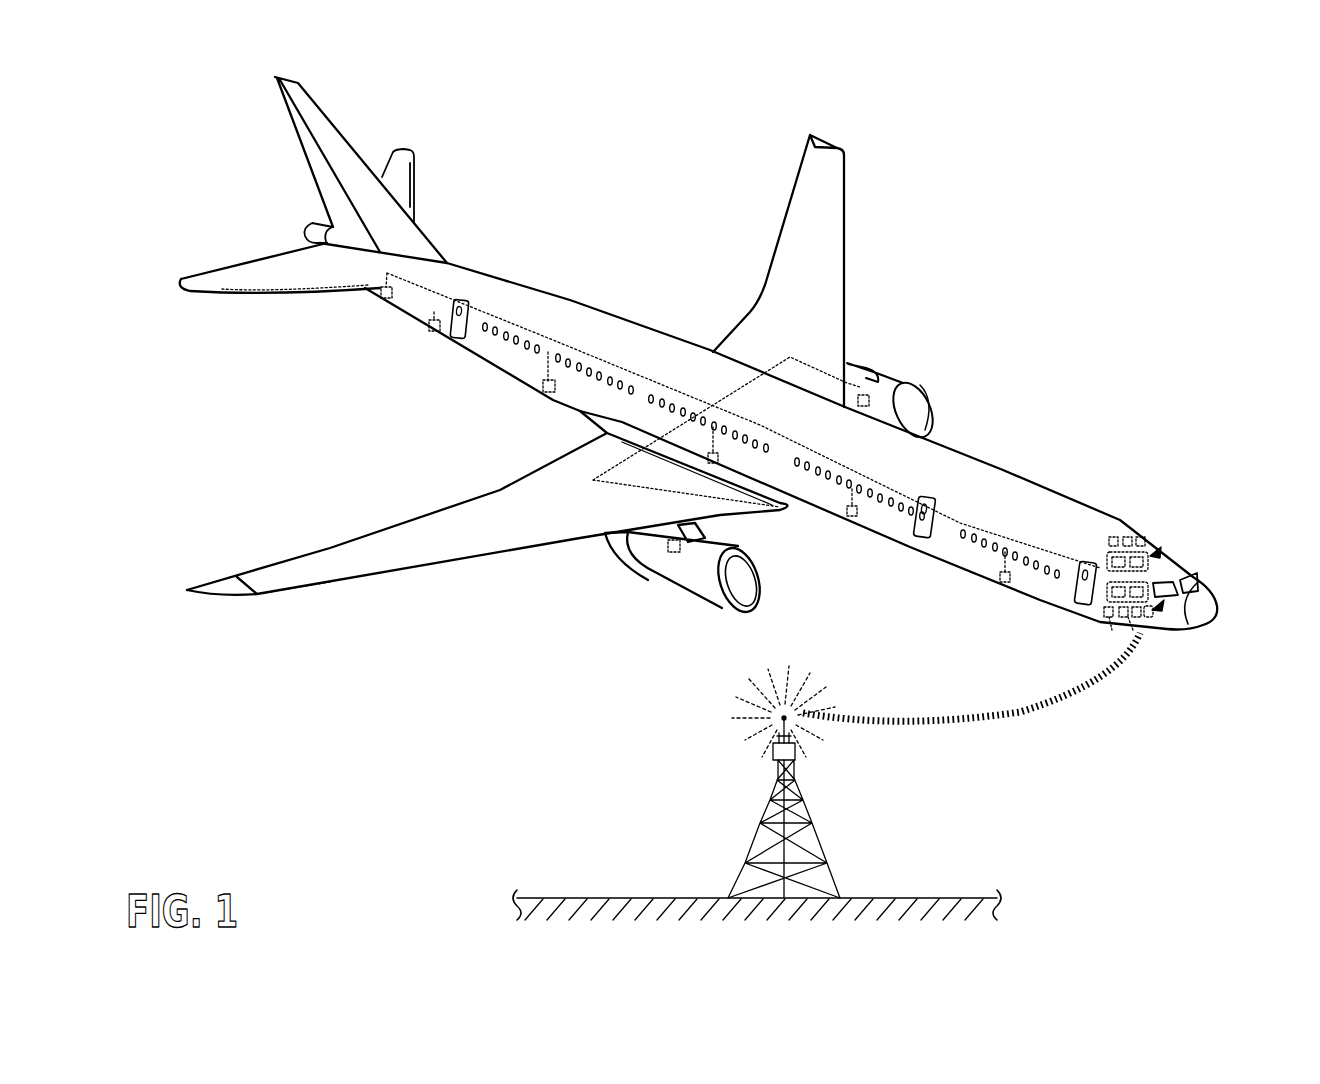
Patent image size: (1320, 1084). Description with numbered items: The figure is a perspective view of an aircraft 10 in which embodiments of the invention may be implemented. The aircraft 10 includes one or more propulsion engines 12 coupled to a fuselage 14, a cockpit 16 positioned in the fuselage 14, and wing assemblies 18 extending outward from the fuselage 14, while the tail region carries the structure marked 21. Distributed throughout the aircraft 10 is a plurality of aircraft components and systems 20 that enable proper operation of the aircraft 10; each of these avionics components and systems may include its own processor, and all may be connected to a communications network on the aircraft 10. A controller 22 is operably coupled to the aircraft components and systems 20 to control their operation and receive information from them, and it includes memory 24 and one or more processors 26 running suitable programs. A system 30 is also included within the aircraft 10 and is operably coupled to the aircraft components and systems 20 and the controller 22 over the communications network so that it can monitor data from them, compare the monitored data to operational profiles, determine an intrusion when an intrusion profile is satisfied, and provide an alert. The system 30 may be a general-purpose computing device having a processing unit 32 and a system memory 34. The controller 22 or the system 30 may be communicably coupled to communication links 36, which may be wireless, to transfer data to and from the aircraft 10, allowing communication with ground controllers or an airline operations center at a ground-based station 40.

The aircraft 10 is at (728, 394).
The propulsion engine 12 is at (683, 573).
The fuselage 14 is at (948, 457).
The cockpit 16 is at (1197, 580).
The wing assembly 18 is at (790, 290).
The aircraft components and systems 20 is at (386, 300).
The tail 21 is at (405, 195).
The controller 22 is at (1159, 548).
The memory 24 is at (1108, 553).
The processor 26 is at (1147, 563).
The system 30 is at (1160, 607).
The processing unit 32 is at (1107, 590).
The system memory 34 is at (1150, 617).
The communication link 36 is at (1118, 623).
The ground-based station 40 is at (808, 809).